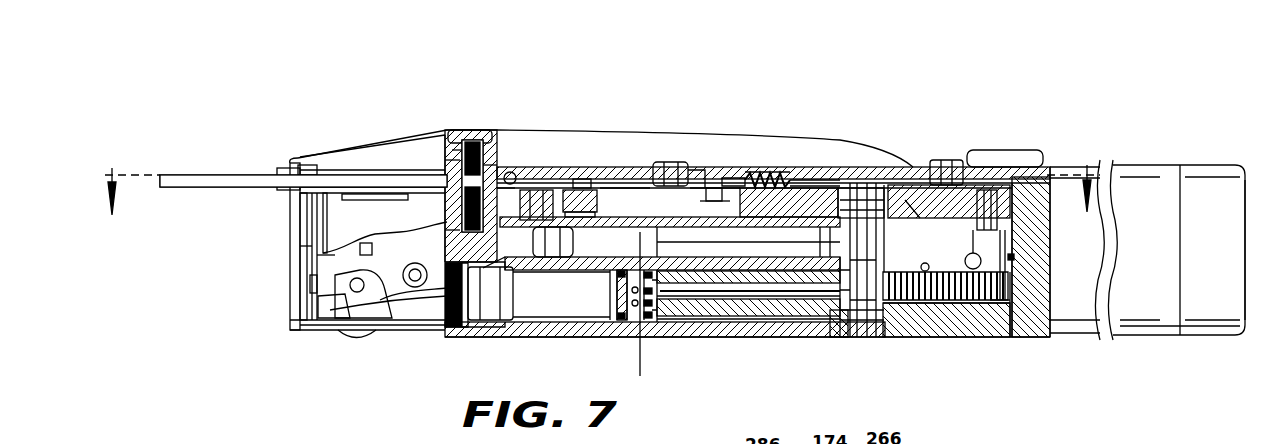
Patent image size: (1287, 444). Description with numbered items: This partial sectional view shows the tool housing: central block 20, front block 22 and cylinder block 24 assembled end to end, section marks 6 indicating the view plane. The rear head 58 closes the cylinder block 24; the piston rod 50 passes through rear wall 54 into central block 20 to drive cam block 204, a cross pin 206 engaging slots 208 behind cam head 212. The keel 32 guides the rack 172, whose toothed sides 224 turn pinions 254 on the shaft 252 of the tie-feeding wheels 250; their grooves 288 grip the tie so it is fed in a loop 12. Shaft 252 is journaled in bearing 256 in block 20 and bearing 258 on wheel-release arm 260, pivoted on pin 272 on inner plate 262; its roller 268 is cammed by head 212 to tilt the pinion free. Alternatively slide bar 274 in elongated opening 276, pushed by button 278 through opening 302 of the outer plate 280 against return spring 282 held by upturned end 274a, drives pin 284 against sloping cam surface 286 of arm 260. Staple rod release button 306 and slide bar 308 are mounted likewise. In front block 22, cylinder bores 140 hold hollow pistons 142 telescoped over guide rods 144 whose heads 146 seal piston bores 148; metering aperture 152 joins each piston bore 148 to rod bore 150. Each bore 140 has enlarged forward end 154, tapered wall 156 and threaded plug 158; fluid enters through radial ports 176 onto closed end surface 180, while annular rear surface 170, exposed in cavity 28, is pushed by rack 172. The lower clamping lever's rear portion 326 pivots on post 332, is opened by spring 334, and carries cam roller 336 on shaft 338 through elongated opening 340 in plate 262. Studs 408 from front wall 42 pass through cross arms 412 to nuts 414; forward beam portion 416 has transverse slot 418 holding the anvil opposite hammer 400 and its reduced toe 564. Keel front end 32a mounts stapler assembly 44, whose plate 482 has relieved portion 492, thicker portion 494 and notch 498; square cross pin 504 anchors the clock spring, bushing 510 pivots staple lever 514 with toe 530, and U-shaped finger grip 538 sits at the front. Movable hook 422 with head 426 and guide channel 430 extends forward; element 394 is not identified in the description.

The section line 6- 6 is at (602, 180).
The loop 12 is at (640, 242).
The central block 20 is at (972, 330).
The front block 22 is at (755, 318).
The cylinder block 24 is at (1154, 165).
The cavity 28 is at (703, 217).
The keel member 32 is at (938, 305).
The front end of the keel 32a is at (393, 320).
The front wall 42 is at (448, 235).
The stapler assembly 44 is at (356, 332).
The piston rod 50 is at (1012, 247).
The rear wall 54 is at (1040, 286).
The rear head 58 is at (1230, 205).
The cylinder bores 140 is at (549, 330).
The hollow piston 142 is at (782, 320).
The internal guide rod 144 is at (760, 299).
The head 146 is at (664, 320).
The central bore 148 is at (803, 322).
The bore 150 is at (825, 322).
The metering aperture 152 is at (716, 320).
The forward end portion 154 is at (490, 325).
The tapered wall 156 is at (505, 325).
The threaded plug 158 is at (455, 332).
The annular rear surface 170 is at (617, 295).
The rack 172 is at (998, 300).
The radially opening ports 176 is at (620, 280).
The closed front end surface 180 is at (627, 306).
The cam block 204 is at (1012, 260).
The cross pin 206 is at (1008, 257).
The transversely aligned slots 208 is at (965, 262).
The head 212 is at (740, 240).
The toothed sides 224 is at (1000, 310).
The tie-feeding wheels 250 is at (867, 185).
The shaft 252 is at (880, 236).
The pinions 254 is at (880, 250).
The bearing 256 is at (883, 322).
The bearing 258 is at (884, 185).
The wheel-release arm 260 is at (907, 200).
The inner plate 262 is at (592, 188).
The roller 268 is at (506, 188).
The pivot pin 272 is at (1000, 208).
The slide bar 274 is at (672, 162).
The upturned end 274a is at (738, 175).
The elongated opening 276 is at (777, 175).
The push button 278 is at (642, 188).
The outer plate 280 is at (850, 167).
The return spring 282 is at (764, 170).
The pin 284 is at (716, 188).
The sloping cam surface 286 is at (724, 178).
The semicircular grooves 288 is at (818, 180).
The opening 302 is at (686, 165).
The staple rod release button 306 is at (945, 165).
The slide bar 308 is at (965, 158).
The rear portion 326 is at (580, 188).
The pivot post 332 is at (442, 150).
The spring 334 is at (489, 167).
The cam roller 336 is at (567, 190).
The shaft 338 is at (592, 200).
The elongated opening 340 is at (520, 172).
The plate 394 is at (316, 211).
The hammer 400 is at (310, 288).
The studs 408 is at (456, 150).
The cross arms 412 is at (452, 165).
The nuts 414 is at (470, 130).
The forward portion 416 is at (330, 163).
The transverse slot 418 is at (291, 168).
The movable hook 422 is at (350, 194).
The head 426 is at (191, 175).
The guide channel 430 is at (190, 188).
The plate 482 is at (303, 250).
The relieved portion 492 is at (328, 265).
The thicker portion 494 is at (326, 192).
The notch 498 is at (445, 180).
The square cross pin 504 is at (366, 255).
The bushing 510 is at (418, 287).
The staple lever 514 is at (332, 320).
The front toe portions 530 is at (312, 305).
The U-shaped finger grip 538 is at (300, 210).
The reduced toe portion 564 is at (312, 230).